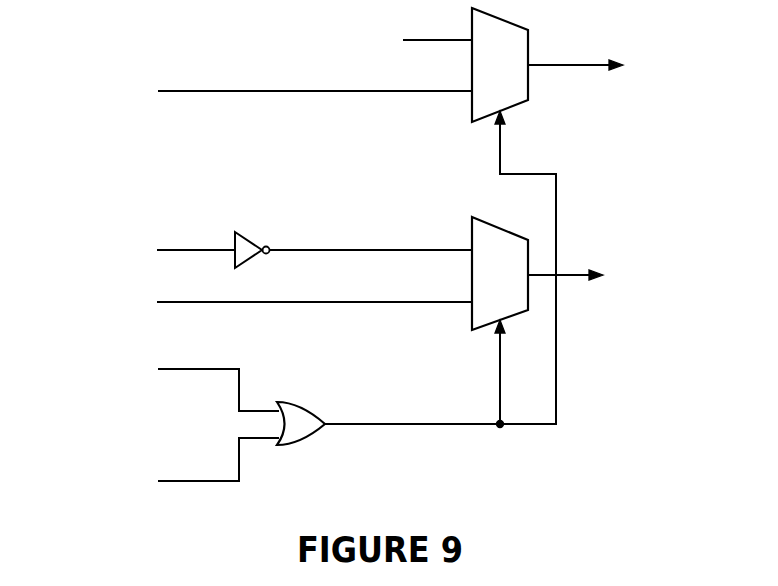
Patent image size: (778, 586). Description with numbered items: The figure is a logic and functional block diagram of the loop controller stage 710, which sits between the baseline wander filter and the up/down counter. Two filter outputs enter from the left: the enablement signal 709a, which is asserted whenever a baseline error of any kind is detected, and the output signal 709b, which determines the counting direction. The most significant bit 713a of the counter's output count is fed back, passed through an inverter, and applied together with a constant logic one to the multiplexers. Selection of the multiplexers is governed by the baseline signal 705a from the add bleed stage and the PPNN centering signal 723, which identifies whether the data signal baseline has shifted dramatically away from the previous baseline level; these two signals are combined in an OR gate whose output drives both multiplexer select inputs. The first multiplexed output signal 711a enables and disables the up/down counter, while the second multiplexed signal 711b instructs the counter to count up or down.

The loop controller stage 710 is at (578, 472).
The enablement signal 709a is at (268, 91).
The first multiplexed output signal 711a is at (563, 64).
The most significant bit 713a is at (213, 248).
The output signal 709b is at (312, 300).
The second multiplexed signal 711b is at (565, 273).
The baseline signal 705a is at (199, 371).
The PPNN centering signal 723 is at (211, 483).